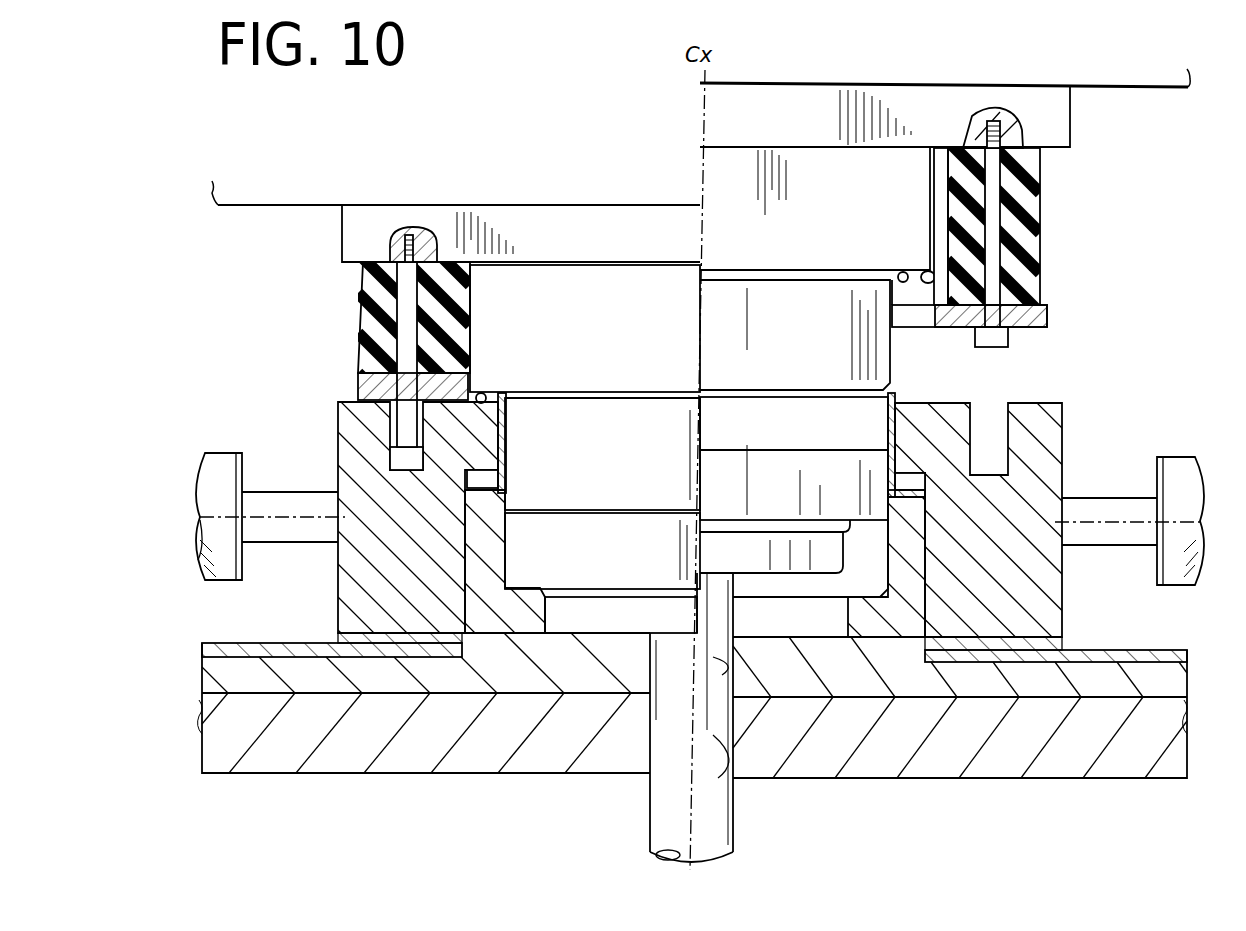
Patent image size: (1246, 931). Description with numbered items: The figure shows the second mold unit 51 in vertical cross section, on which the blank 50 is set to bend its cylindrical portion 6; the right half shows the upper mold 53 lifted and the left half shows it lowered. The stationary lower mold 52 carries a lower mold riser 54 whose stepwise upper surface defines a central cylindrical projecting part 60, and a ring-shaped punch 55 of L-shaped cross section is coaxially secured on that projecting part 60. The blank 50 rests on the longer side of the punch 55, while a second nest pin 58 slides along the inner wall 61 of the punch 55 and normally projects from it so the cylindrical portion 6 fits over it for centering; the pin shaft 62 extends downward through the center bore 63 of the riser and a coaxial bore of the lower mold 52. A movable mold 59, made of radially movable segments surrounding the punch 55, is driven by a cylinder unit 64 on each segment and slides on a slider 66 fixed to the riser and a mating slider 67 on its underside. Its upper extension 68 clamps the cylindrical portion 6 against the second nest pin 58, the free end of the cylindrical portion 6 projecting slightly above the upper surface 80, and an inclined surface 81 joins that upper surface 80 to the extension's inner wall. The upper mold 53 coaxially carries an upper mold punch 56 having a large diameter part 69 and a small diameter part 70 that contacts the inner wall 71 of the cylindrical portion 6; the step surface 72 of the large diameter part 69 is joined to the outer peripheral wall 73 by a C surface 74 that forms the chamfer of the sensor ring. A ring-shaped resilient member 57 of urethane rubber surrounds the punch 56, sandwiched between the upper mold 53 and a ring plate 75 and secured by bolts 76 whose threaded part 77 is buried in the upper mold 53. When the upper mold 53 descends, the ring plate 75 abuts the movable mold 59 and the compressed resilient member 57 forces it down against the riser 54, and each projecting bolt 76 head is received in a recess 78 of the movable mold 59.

The second mold unit 51 is at (657, 68).
The upper mold 53 is at (502, 223).
The upper mold punch 56 is at (572, 290).
The upper large diameter part 69 is at (826, 237).
The lower small diameter part 70 is at (805, 345).
The second nest pin 58 is at (647, 560).
The step surface 72 is at (903, 272).
The C surface 74 is at (921, 278).
The inclined surface 81 is at (505, 393).
The outer peripheral wall 73 is at (892, 343).
The inner wall 61 is at (860, 530).
The movable mold 59 is at (1045, 457).
The inner wall 71 is at (505, 483).
The cylindrical portion 6 is at (510, 452).
The blank 50 is at (510, 423).
The upper surface 80 is at (905, 437).
The upper extension 68 is at (920, 440).
The recess 78 is at (390, 428).
The resilient member 57 is at (1025, 195).
The bolt 76 is at (1000, 235).
The threaded part 77 is at (1000, 130).
The ring plate 75 is at (1047, 315).
The cylinder unit 64 is at (1172, 470).
The shaft 62 is at (670, 826).
The center bore 63 is at (740, 660).
The cylindrical projecting part 60 is at (805, 652).
The lower mold 52 is at (812, 762).
The lower mold riser 54 is at (866, 684).
The punch 55 is at (898, 638).
The slider 66 is at (1150, 652).
The mating slider 67 is at (1066, 638).